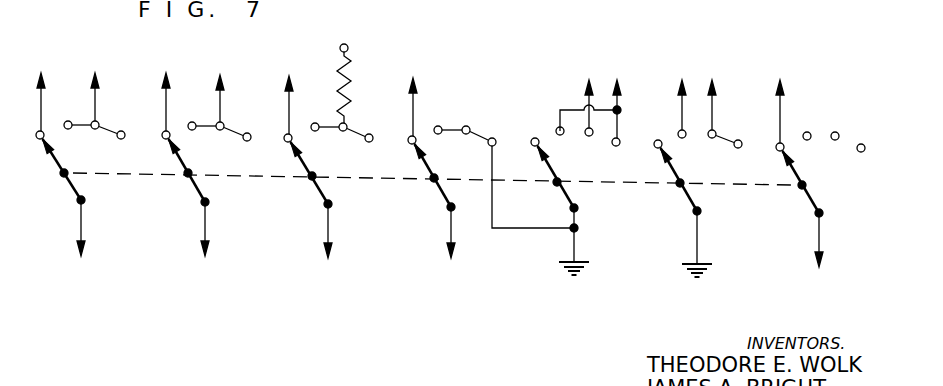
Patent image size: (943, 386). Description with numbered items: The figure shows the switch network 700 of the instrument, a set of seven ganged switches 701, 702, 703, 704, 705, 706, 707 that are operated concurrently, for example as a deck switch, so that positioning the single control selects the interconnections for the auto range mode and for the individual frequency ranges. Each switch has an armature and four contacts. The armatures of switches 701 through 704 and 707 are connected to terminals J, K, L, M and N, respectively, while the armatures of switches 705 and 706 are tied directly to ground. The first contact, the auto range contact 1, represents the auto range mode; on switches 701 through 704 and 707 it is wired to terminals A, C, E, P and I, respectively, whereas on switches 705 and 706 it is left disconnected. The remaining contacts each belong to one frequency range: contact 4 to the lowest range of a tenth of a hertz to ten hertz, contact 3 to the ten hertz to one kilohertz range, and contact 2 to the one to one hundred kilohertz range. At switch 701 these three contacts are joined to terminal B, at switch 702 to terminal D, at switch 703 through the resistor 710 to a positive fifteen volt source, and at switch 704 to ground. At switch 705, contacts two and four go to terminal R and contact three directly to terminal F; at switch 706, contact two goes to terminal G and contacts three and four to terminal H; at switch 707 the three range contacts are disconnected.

The switch network 700 is at (397, 302).
The switch 701 is at (81, 165).
The switch 702 is at (224, 160).
The switch 703 is at (347, 160).
The switch 704 is at (457, 163).
The switch 705 is at (593, 167).
The switch 706 is at (713, 167).
The switch 707 is at (833, 173).
The resistor 710 is at (350, 91).
The auto range contact 1 is at (30, 122).
The contact 2 is at (62, 113).
The contact 3 is at (104, 113).
The contact 4 is at (129, 123).